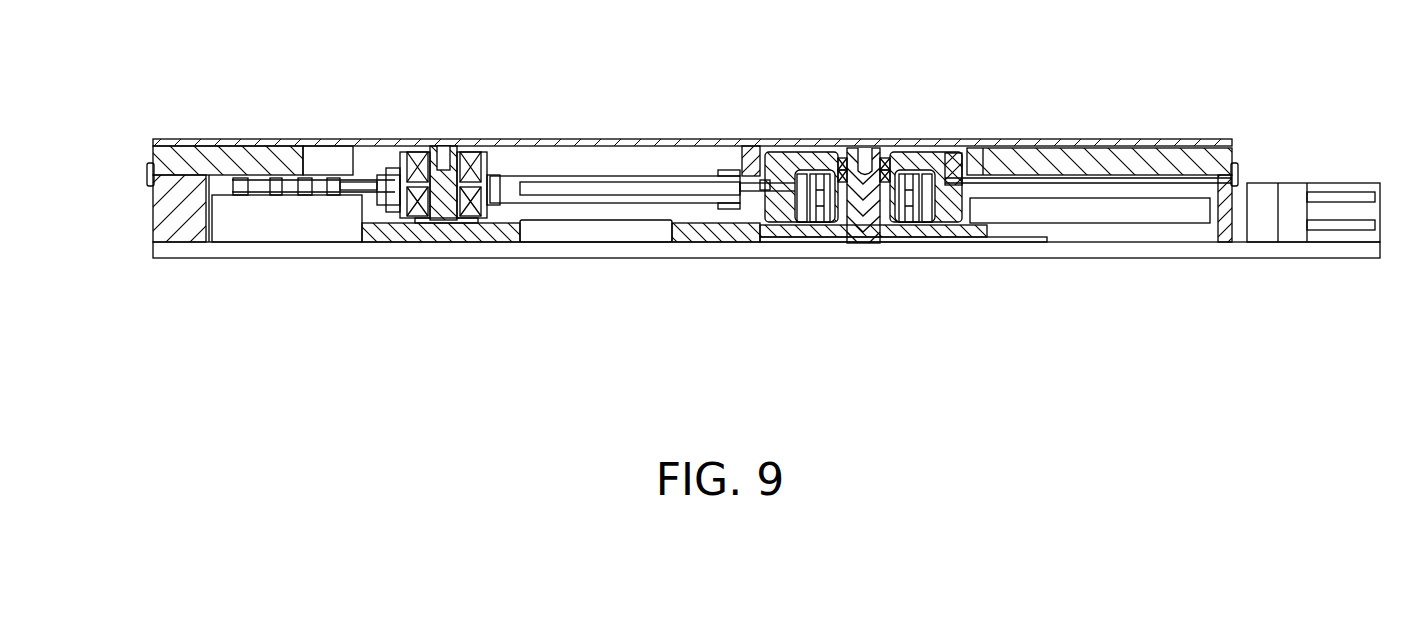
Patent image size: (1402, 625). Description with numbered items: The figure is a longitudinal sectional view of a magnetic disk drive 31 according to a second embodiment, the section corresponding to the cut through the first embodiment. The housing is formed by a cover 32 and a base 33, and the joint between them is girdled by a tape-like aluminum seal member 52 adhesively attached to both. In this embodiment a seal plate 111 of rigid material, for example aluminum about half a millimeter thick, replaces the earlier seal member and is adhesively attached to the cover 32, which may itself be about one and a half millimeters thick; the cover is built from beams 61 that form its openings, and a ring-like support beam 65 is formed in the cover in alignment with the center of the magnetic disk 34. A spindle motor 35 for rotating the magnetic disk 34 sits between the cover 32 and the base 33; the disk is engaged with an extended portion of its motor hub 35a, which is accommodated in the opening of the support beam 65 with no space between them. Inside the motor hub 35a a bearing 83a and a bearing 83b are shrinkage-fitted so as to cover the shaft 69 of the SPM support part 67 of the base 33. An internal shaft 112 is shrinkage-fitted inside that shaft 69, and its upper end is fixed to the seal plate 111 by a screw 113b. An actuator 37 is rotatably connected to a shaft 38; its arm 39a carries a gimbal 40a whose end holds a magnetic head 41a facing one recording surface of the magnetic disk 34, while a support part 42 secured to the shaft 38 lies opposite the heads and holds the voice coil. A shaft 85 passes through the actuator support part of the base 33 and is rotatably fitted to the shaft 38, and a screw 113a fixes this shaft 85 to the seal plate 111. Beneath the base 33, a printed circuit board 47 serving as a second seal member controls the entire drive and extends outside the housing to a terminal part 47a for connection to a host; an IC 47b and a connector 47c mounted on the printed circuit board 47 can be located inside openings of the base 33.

The disk drive 31 is at (577, 35).
The cover 32 is at (153, 171).
The base 33 is at (146, 234).
The magnetic disk 34 is at (1181, 196).
The spindle motor 35 is at (932, 219).
The motor hub 35a is at (809, 167).
The actuator 37 is at (498, 159).
The shaft 38 is at (386, 198).
The arm 39a is at (588, 182).
The gimbal 40a is at (678, 176).
The magnetic head 41a is at (731, 176).
The support part 42 is at (355, 182).
The printed circuit board 47 is at (1081, 258).
The terminal part 47a is at (1321, 183).
The IC 47b is at (600, 228).
The connector 47c is at (270, 226).
The seal member 52 is at (148, 172).
The beam 61 is at (1157, 149).
The support beam 65 is at (749, 166).
The SPM support part 67 is at (783, 232).
The shaft 69 is at (919, 220).
The bearing 83a is at (886, 159).
The bearing 83b is at (906, 158).
The shaft 85 is at (445, 222).
The seal plate 111 is at (207, 143).
The internal shaft 112 is at (862, 226).
The screw 113a is at (446, 148).
The screw 113b is at (863, 144).